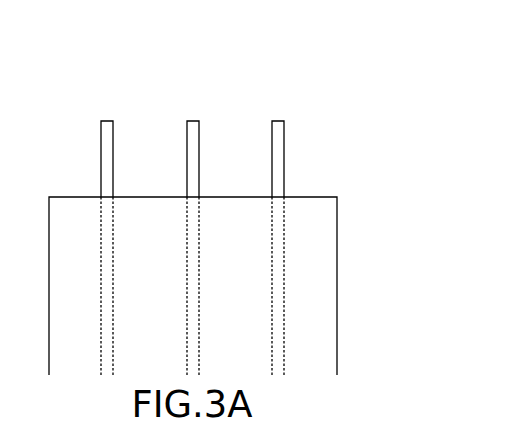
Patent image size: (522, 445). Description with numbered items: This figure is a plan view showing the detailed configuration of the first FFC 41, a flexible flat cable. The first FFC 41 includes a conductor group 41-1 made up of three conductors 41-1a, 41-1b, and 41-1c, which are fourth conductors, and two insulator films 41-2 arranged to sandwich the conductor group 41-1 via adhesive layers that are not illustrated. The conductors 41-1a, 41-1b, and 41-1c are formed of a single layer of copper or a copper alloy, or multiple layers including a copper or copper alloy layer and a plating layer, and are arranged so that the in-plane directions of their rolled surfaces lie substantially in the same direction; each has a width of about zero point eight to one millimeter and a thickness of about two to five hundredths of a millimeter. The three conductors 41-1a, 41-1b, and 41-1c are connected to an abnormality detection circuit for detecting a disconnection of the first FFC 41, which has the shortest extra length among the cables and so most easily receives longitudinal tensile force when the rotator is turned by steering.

The first FFC 41 is at (347, 231).
The conductor group 41-1 is at (352, 51).
The conductor 41-1a is at (108, 120).
The conductor 41-1b is at (194, 120).
The conductor 41-1c is at (278, 120).
The insulator film 41-2 is at (323, 293).